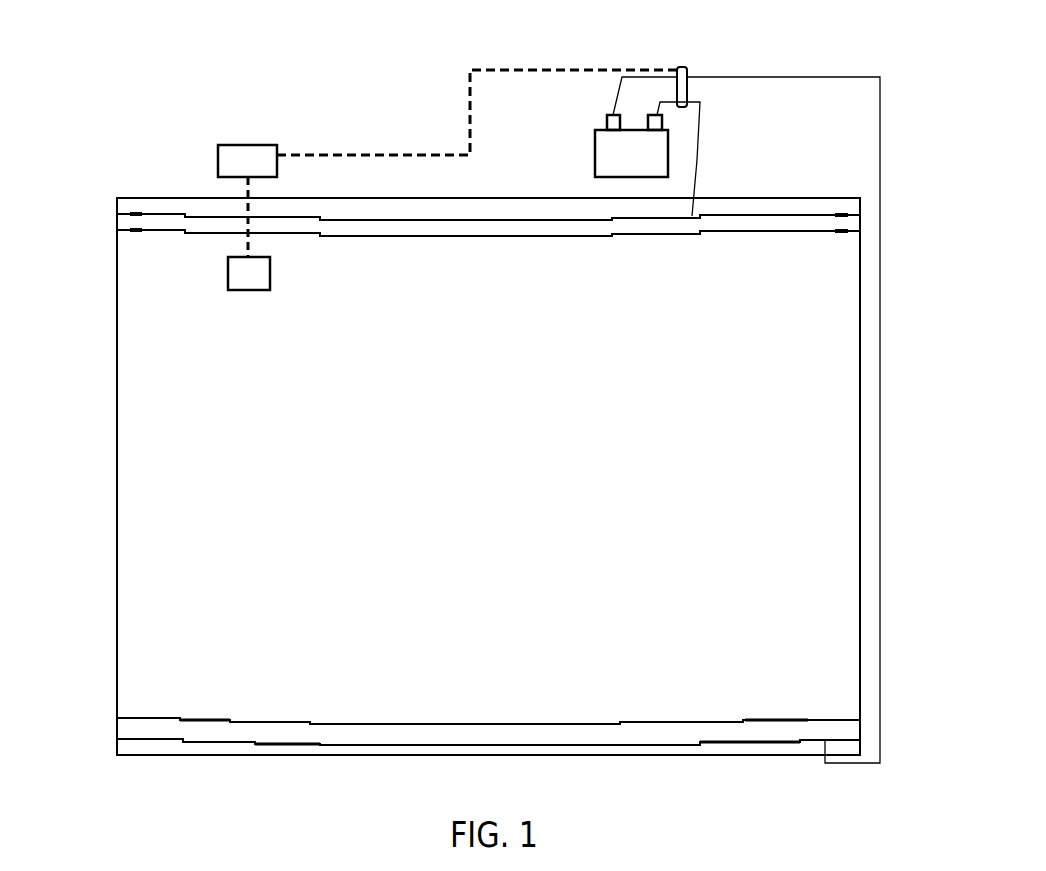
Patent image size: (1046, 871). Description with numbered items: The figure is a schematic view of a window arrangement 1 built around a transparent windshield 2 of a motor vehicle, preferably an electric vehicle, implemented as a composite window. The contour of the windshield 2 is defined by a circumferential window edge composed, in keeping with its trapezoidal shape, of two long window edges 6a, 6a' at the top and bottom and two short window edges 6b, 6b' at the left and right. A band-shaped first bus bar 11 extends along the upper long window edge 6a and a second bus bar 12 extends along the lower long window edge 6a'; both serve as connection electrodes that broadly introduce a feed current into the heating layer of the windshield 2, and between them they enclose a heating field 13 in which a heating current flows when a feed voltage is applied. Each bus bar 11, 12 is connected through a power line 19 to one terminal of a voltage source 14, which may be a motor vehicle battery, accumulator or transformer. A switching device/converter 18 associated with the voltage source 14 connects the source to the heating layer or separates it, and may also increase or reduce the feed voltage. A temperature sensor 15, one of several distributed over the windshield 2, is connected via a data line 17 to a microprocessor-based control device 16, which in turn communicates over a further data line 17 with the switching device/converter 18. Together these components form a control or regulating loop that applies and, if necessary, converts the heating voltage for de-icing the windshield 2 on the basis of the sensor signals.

The window arrangement 1 is at (226, 92).
The windshield 2 is at (248, 762).
The upper long window edge 6a is at (488, 445).
The lower long window edge 6a' is at (560, 795).
The short window edge 6b is at (93, 480).
The short window edge 6b' is at (898, 480).
The first bus bar 11 is at (170, 222).
The second bus bar 12 is at (375, 733).
The heating field 13 is at (533, 470).
The voltage source 14 is at (651, 170).
The temperature sensor 15 is at (272, 272).
The control device 16 is at (262, 145).
The data line 17 is at (391, 153).
The switching device/converter 18 is at (685, 92).
The power line 19 is at (698, 165).